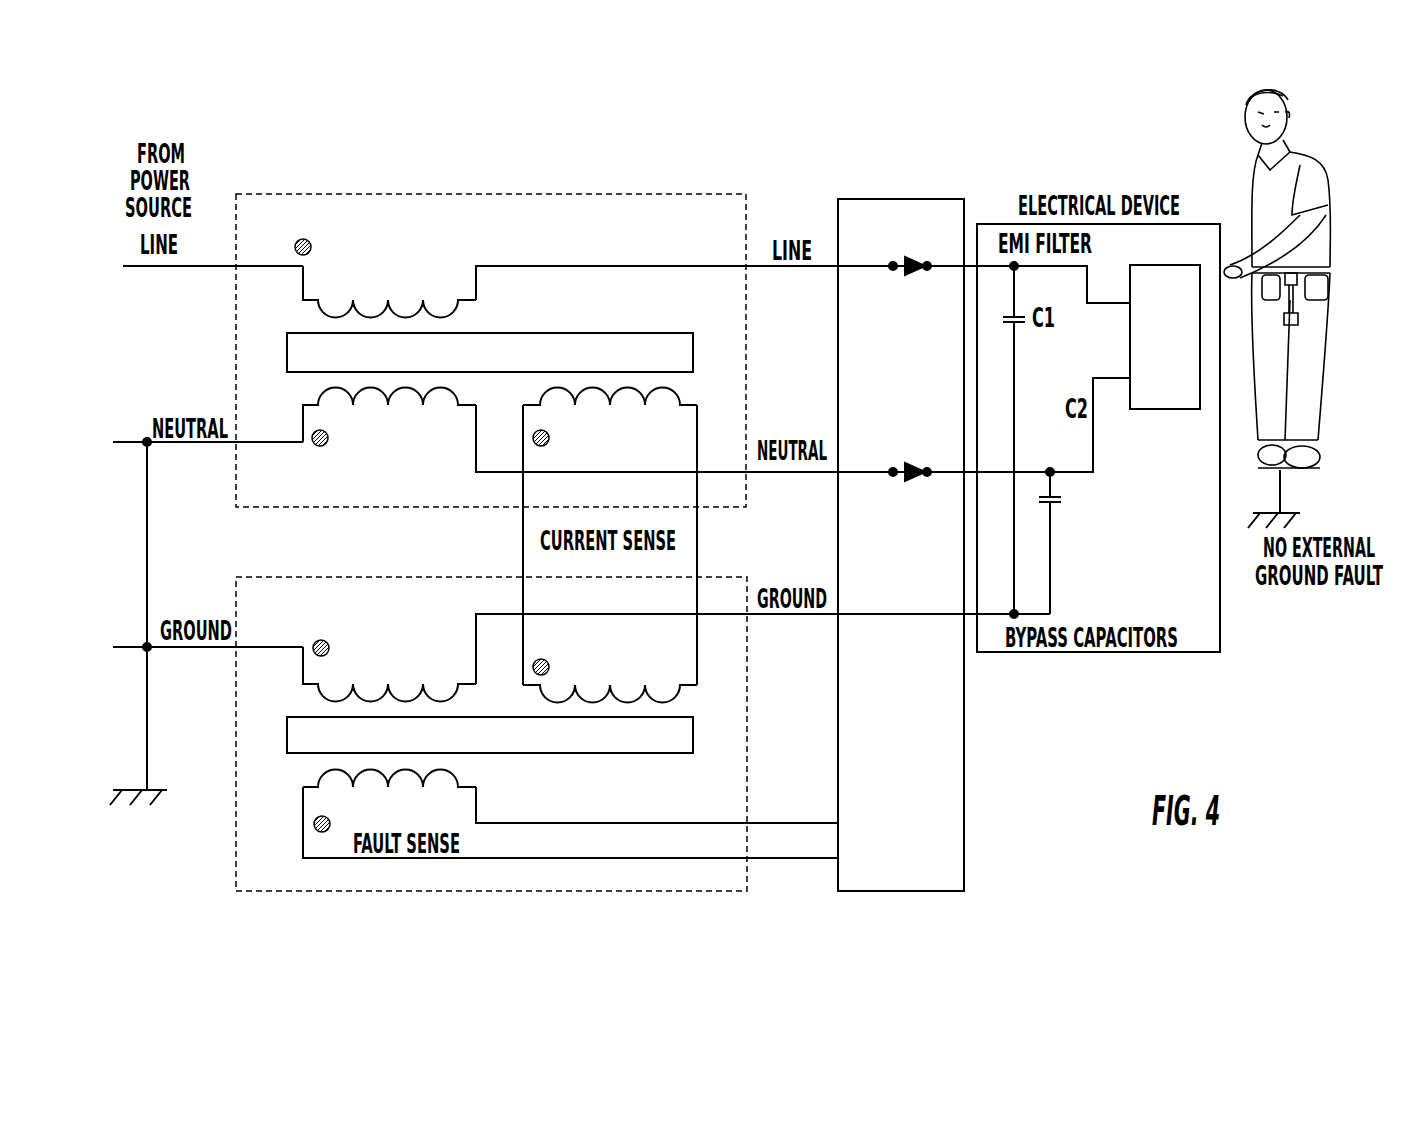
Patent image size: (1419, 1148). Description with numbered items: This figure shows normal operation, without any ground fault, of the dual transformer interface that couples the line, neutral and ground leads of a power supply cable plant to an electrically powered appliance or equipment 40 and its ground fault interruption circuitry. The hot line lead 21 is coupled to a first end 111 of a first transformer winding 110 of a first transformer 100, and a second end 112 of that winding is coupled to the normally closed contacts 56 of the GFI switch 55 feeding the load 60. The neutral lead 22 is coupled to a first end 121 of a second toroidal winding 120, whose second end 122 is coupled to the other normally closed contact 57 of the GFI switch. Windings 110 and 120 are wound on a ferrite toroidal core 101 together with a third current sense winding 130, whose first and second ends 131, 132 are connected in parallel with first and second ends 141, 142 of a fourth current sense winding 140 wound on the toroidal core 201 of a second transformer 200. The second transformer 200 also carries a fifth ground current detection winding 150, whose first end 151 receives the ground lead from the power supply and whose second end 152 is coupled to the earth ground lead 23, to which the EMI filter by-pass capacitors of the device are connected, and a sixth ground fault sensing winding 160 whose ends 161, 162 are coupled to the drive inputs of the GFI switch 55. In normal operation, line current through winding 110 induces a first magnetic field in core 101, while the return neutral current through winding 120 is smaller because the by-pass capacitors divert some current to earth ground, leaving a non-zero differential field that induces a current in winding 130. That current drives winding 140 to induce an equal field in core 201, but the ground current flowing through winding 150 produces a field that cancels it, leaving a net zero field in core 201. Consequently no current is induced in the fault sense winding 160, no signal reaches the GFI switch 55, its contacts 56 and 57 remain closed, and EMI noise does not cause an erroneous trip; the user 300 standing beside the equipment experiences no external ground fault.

The line lead 21 is at (221, 265).
The neutral lead 22 is at (190, 444).
The earth ground lead 23 is at (201, 652).
The electrical appliance or equipment 40 is at (1197, 223).
The GFI switch 55 is at (965, 805).
The normally closed contacts 56 is at (905, 264).
The normally closed contact 57 is at (908, 468).
The load 60 is at (1140, 410).
The first transformer 100 is at (625, 194).
The ferrite toroidal core 101 is at (490, 352).
The first transformer winding 110 is at (373, 293).
The first end of first transformer winding 111 is at (300, 267).
The second end of first transformer winding 112 is at (476, 266).
The second toroidal winding 120 is at (397, 412).
The first end of second toroidal winding 121 is at (302, 441).
The second end of second toroidal winding 122 is at (474, 436).
The third current sense toroidal winding 130 is at (615, 410).
The first end of third current sense winding 131 is at (523, 405).
The second end of third current sense winding 132 is at (700, 405).
The fourth current sense toroidal winding 140 is at (605, 673).
The first end of fourth current sense winding 141 is at (525, 685).
The second end of fourth current sense winding 142 is at (698, 685).
The ground current detection toroidal winding 150 is at (393, 665).
The first end of ground current detection winding 151 is at (290, 647).
The second end of ground current detection winding 152 is at (476, 616).
The ground fault sensing toroidal winding 160 is at (378, 792).
The first end of ground fault sensing winding 161 is at (302, 816).
The second end of ground fault sensing winding 162 is at (477, 824).
The second transformer 200 is at (638, 893).
The toroidal core 201 is at (490, 735).
The user 300 is at (1318, 357).